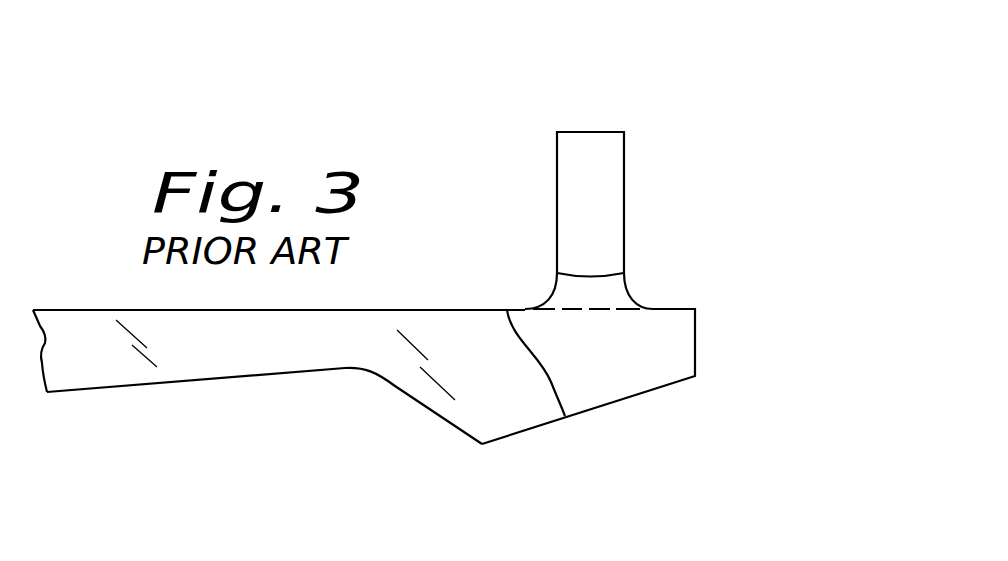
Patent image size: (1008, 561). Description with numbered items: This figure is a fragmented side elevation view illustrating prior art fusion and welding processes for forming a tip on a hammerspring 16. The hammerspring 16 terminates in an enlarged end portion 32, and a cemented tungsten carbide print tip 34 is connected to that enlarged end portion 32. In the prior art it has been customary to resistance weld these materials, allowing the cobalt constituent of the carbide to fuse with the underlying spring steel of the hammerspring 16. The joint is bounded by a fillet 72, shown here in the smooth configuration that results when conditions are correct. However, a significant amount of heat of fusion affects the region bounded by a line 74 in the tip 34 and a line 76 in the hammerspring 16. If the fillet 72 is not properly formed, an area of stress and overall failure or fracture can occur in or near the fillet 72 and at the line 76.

The hammerspring 16 is at (185, 343).
The enlarged end portion 32 is at (497, 412).
The print tip 34 is at (603, 160).
The fillet 72 is at (612, 298).
The line of the tip 74 is at (587, 273).
The line of the hammerspring 76 is at (554, 391).